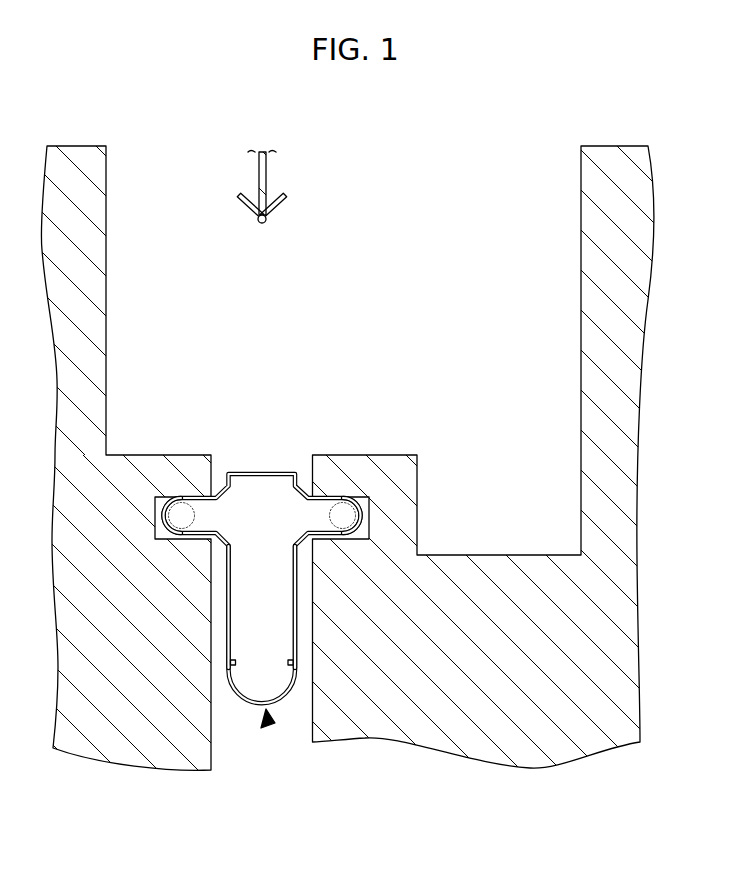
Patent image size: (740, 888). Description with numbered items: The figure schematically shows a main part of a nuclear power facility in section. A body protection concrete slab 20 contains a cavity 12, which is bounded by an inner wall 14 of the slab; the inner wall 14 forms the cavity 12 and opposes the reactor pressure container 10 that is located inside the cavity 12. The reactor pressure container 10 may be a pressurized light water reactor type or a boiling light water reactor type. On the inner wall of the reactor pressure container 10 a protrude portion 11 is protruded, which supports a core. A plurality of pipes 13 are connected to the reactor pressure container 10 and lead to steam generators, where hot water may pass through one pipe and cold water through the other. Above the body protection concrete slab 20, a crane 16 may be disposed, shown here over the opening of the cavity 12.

The reactor pressure container 10 is at (268, 708).
The protrude portion 11 is at (236, 663).
The cavity 12 is at (263, 734).
The pipes 13 is at (178, 514).
The inner wall 14 is at (208, 742).
The crane 16 is at (266, 171).
The body protection concrete slab 20 is at (478, 703).